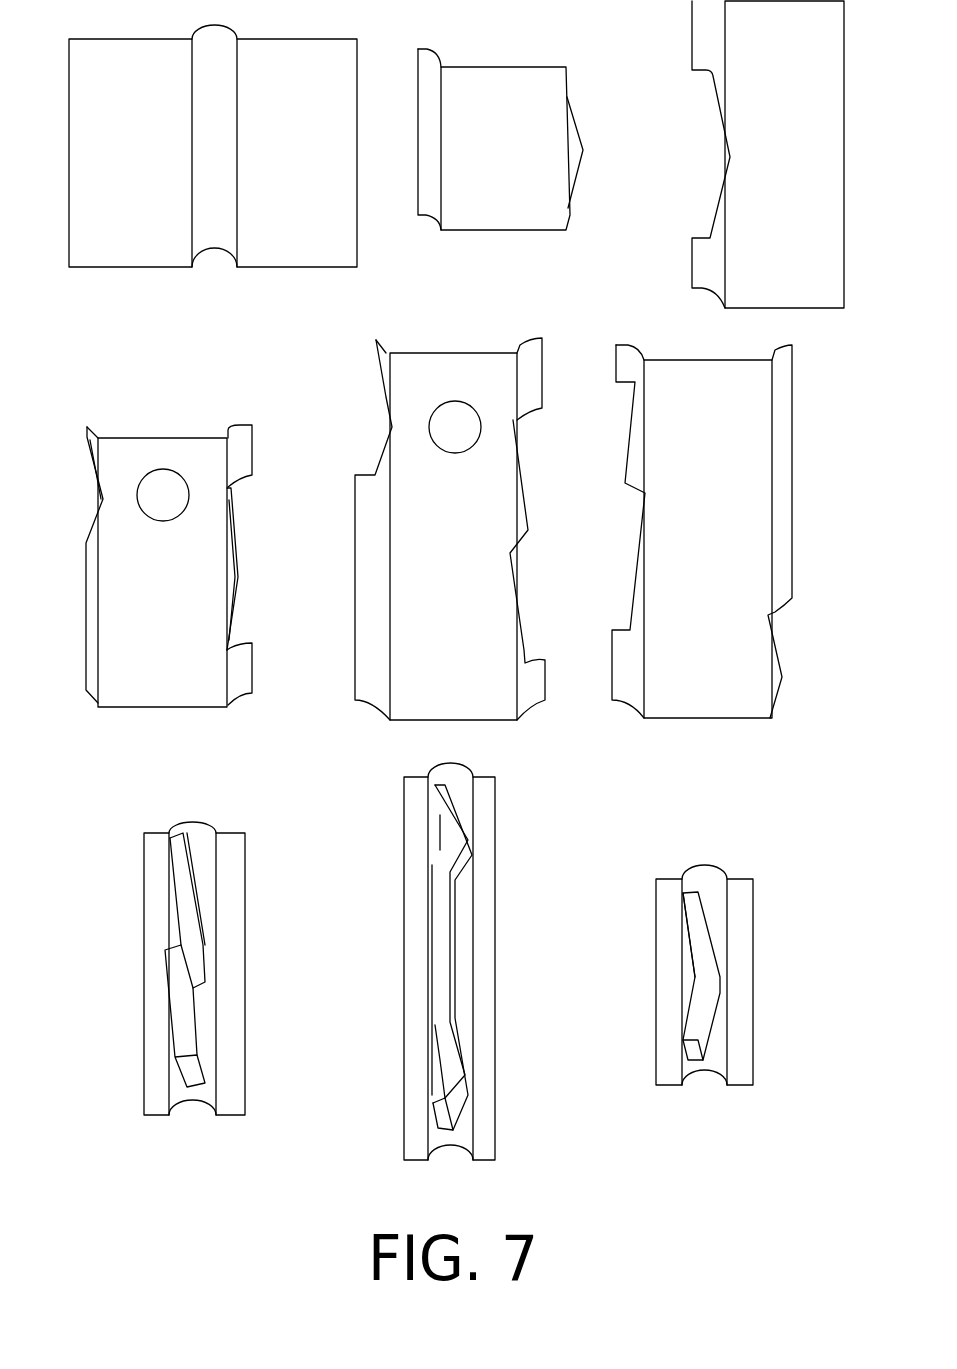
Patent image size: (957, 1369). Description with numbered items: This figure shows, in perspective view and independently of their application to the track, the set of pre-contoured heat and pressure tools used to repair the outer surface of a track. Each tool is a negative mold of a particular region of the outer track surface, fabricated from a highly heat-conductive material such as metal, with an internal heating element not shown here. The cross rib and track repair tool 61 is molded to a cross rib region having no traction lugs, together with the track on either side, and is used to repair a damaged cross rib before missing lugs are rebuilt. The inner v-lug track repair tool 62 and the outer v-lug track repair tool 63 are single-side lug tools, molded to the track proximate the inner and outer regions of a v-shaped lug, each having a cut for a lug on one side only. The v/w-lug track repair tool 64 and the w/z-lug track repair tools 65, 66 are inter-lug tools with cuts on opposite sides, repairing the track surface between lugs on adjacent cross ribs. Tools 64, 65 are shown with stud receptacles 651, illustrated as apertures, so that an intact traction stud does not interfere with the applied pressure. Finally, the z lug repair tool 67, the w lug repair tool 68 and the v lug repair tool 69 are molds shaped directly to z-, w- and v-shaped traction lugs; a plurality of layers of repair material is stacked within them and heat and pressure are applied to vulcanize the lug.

The cross rib and track repair tool 61 is at (158, 162).
The inner v-lug track repair tool 62 is at (522, 158).
The outer v-lug track repair tool 63 is at (815, 160).
The v/w-lug track repair tool 64 is at (270, 523).
The w/z-lug track repair tool 65 is at (471, 632).
The stud receptacle 651 is at (455, 425).
The w/z-lug track repair tool 66 is at (731, 635).
The z lug repair tool 67 is at (108, 993).
The w lug repair tool 68 is at (392, 995).
The v lug repair tool 69 is at (640, 995).